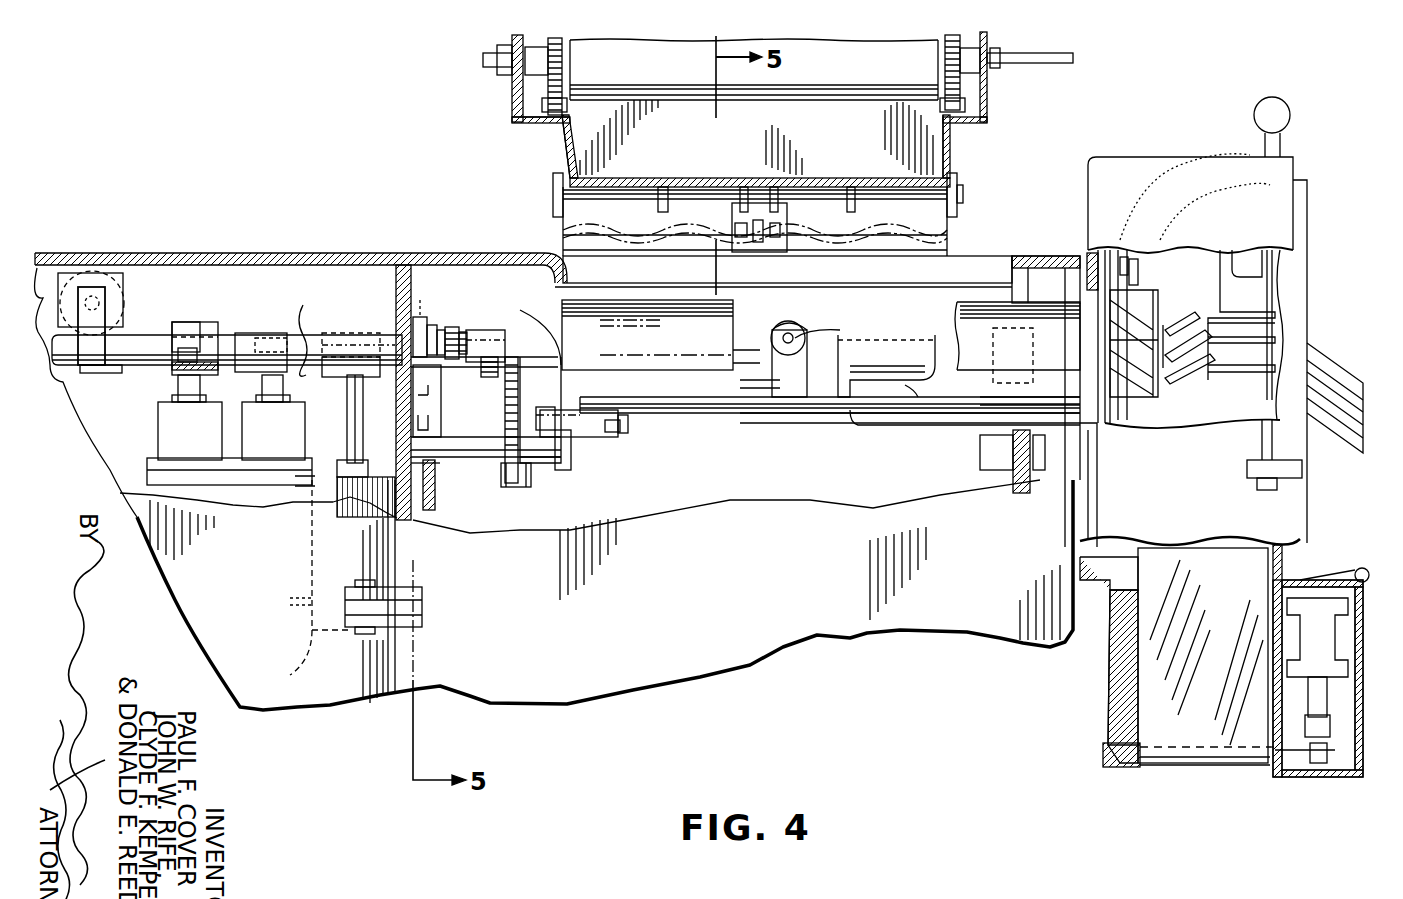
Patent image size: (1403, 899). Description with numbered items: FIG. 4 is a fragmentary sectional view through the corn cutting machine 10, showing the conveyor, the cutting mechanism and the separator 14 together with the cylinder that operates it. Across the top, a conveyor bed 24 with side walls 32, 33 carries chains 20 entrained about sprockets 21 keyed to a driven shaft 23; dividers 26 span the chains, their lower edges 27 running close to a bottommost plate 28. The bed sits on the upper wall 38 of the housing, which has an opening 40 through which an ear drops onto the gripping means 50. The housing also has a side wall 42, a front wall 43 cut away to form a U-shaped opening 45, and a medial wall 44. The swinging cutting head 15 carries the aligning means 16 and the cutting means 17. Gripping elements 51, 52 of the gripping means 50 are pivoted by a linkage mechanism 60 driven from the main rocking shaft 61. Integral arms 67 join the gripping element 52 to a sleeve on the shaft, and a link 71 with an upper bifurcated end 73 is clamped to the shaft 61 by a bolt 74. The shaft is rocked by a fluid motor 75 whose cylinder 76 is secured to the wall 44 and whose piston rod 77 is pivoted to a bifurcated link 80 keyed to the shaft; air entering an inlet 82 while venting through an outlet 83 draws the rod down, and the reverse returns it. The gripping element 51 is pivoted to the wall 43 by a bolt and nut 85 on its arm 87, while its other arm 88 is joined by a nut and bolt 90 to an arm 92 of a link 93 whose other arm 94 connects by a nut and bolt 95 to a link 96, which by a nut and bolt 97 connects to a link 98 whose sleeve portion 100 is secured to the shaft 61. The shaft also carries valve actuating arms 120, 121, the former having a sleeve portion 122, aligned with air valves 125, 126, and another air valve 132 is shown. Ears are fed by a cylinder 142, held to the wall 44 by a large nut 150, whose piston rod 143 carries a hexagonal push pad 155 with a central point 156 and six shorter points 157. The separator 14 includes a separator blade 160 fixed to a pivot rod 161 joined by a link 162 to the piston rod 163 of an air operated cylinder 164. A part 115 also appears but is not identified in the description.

The corn cutting machine 10 is at (1185, 115).
The separator 14 is at (1162, 780).
The swinging cutting head 15 is at (1192, 198).
The corn ear depth regulating and aligning means 16 is at (1145, 290).
The corn cutting means 17 is at (1193, 385).
The chains 20 is at (545, 120).
The sprockets 21 is at (520, 88).
The shaft 23 is at (1068, 64).
The conveyor bed 24 is at (955, 153).
The dividers 26 is at (810, 132).
The lower edges 27 is at (678, 187).
The bottommost plate 28 is at (896, 182).
The side wall 32 is at (563, 148).
The side wall 33 is at (940, 136).
The upper wall 38 is at (322, 253).
The opening 40 is at (960, 268).
The side wall 42 is at (767, 597).
The front wall 43 is at (1013, 495).
The medial wall 44 is at (418, 577).
The U-shaped opening 45 is at (1085, 452).
The gripping means 50 is at (790, 425).
The gripping element 51 is at (678, 325).
The gripping element 52 is at (870, 418).
The linkage mechanism 60 is at (515, 510).
The main rocking shaft 61 is at (548, 367).
The arms 67 is at (922, 345).
The link 71 is at (772, 365).
The upper bifurcated end 73 is at (790, 325).
The bolt 74 is at (834, 319).
The fluid motor 75 is at (281, 657).
The cylinder 76 is at (348, 495).
The piston rod 77 is at (348, 402).
The bifurcated link 80 is at (330, 330).
The inlet 82 is at (300, 500).
The outlet 83 is at (302, 598).
The bolt and nut 85 is at (1032, 495).
The arm 87 is at (980, 405).
The arm 88 is at (648, 395).
The nut and bolt 90 is at (628, 422).
The arm 92 is at (560, 400).
The link 93 is at (555, 455).
The arm 94 is at (528, 487).
The nut and bolt 95 is at (508, 470).
The link 96 is at (500, 458).
The nut and bolt 97 is at (442, 401).
The link 98 is at (496, 380).
The sleeve portion 100 is at (520, 310).
The post 115 is at (437, 495).
The valve actuating arm 120 is at (93, 317).
The valve actuating arm 121 is at (187, 322).
The sleeve portion 122 is at (86, 392).
The air valve 125 is at (168, 290).
The air valve 126 is at (168, 428).
The air valve 132 is at (285, 458).
The cylinder 142 is at (306, 312).
The piston rod 143 is at (431, 313).
The large nut 150 is at (398, 324).
The push pad 155 is at (446, 330).
The central point 156 is at (502, 330).
The shorter point 157 is at (462, 327).
The separator blade 160 is at (1217, 618).
The pivot rod 161 is at (1290, 777).
The link 162 is at (1320, 765).
The piston rod 163 is at (1310, 698).
The fluid motor 164 is at (1318, 608).